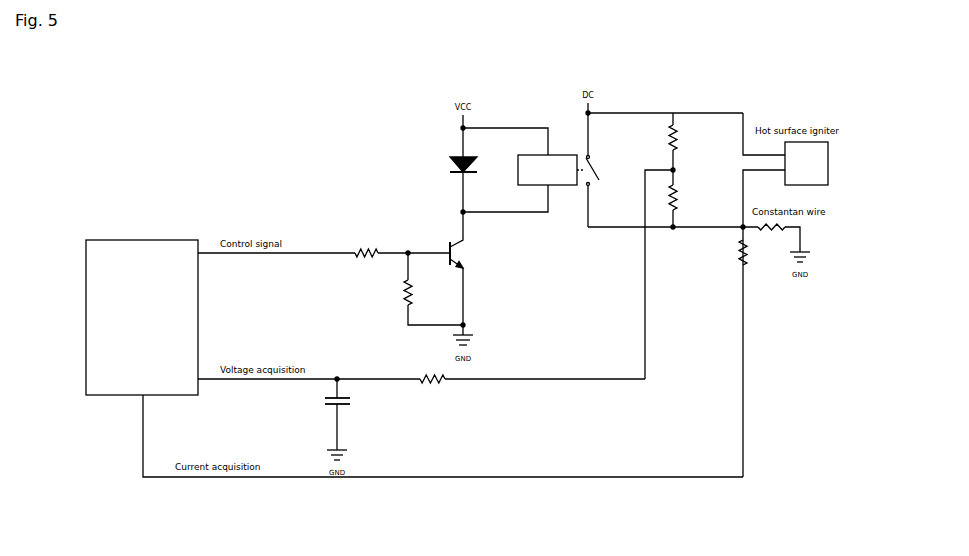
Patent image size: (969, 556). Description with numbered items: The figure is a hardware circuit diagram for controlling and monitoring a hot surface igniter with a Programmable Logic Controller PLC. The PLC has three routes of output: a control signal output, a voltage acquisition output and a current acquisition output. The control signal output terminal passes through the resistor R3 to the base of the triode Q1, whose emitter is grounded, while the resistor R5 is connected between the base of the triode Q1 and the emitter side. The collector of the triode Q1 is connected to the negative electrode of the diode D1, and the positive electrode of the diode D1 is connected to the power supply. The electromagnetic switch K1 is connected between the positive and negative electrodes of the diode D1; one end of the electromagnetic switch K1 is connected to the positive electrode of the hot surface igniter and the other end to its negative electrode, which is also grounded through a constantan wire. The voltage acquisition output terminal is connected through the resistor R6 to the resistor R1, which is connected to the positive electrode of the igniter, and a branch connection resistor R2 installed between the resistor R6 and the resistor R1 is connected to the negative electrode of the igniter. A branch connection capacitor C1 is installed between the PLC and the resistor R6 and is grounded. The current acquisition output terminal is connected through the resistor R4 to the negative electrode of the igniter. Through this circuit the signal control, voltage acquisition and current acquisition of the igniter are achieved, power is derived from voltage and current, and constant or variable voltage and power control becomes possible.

The Programmable Logic Controller PLC is at (142, 317).
The resistor R1 is at (680, 141).
The resistor R2 is at (680, 198).
The resistor R3 is at (365, 247).
The resistor R4 is at (750, 252).
The resistor R5 is at (433, 289).
The resistor R6 is at (432, 374).
The capacitor C1 is at (345, 414).
The diode D1 is at (452, 164).
The triode Q1 is at (464, 268).
The electromagnetic switch K1 is at (599, 192).